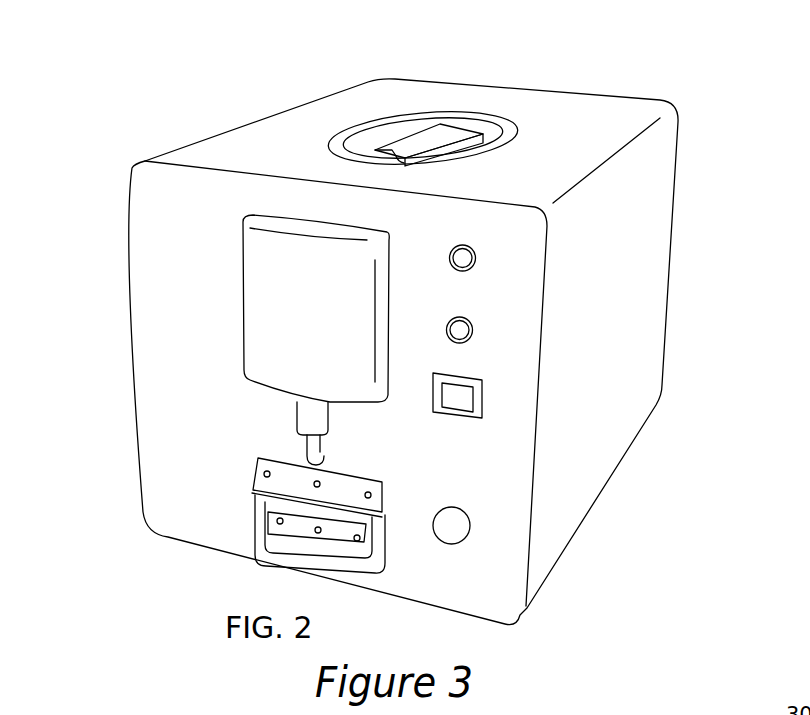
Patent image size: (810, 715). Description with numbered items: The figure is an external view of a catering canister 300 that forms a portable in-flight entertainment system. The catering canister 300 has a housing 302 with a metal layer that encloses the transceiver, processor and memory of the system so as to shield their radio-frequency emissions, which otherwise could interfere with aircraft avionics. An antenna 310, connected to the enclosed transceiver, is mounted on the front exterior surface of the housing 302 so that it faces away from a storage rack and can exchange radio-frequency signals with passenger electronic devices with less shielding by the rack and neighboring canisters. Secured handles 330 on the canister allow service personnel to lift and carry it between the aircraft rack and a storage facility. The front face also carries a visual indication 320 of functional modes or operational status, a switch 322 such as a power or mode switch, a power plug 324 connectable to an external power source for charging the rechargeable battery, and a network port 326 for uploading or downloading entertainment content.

The catering canister 300 is at (448, 56).
The housing 302 is at (550, 117).
The antenna 310 is at (277, 327).
The visual indication 320 is at (470, 253).
The switch 322 is at (471, 320).
The power plug 324 is at (477, 407).
The port 326 is at (472, 530).
The handles 330 is at (416, 137).